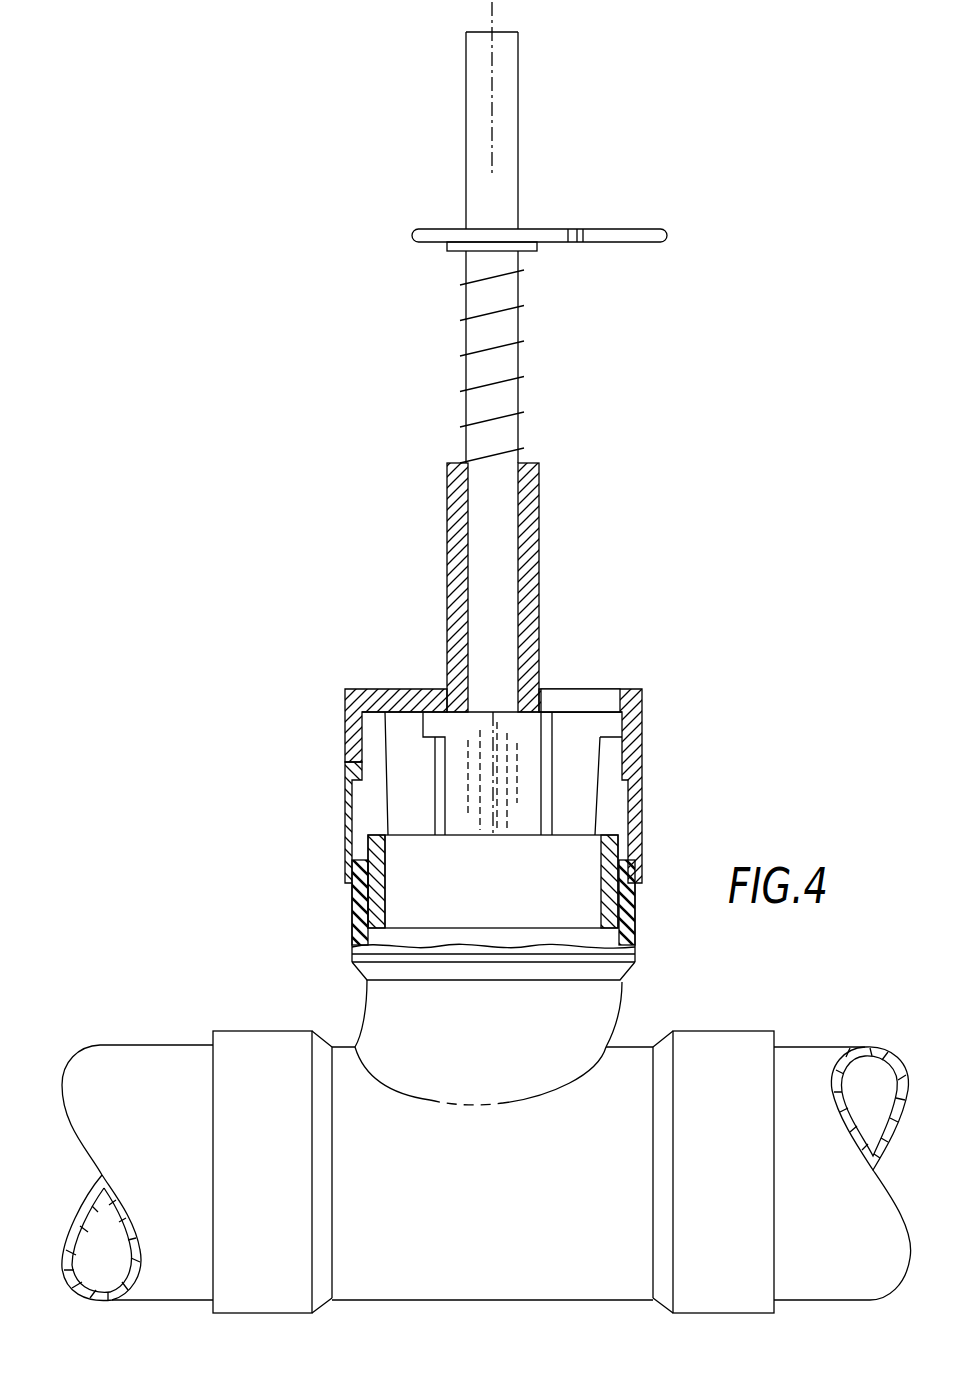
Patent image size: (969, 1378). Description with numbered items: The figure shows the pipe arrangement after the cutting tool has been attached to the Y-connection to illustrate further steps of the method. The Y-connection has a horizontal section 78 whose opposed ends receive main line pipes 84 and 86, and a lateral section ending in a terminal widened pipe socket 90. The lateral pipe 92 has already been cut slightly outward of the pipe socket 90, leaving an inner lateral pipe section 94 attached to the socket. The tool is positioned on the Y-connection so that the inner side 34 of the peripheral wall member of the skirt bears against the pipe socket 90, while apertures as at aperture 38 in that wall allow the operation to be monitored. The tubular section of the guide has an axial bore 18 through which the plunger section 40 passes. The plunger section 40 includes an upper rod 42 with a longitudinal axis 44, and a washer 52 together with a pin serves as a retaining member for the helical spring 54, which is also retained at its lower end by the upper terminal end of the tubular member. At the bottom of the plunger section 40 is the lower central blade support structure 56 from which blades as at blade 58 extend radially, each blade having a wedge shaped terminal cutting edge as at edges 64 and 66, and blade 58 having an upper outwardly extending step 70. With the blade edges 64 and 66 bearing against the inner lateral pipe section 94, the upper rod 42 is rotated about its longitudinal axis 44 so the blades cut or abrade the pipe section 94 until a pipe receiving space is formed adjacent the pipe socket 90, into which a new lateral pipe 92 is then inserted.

The axial bore 18 is at (478, 540).
The inner side 34 is at (357, 813).
The aperture 38 is at (345, 763).
The plunger section 40 is at (506, 357).
The upper rod 42 is at (518, 78).
The longitudinal axis 44 is at (492, 20).
The washer 52 is at (448, 252).
The helical spring 54 is at (460, 428).
The lower central blade support structure 56 is at (528, 826).
The blade 58 is at (548, 228).
The wedge shaped terminal cutting edge 64 is at (438, 803).
The wedge shaped terminal cutting edge 66 is at (600, 788).
The upper outwardly extending step 70 is at (432, 722).
The horizontal section 78 is at (345, 1053).
The main line pipe 84 is at (163, 1053).
The main line pipe 86 is at (800, 1053).
The terminal widened pipe socket 90 is at (350, 893).
The lateral pipe 92 is at (596, 858).
The inner lateral pipe section 94 is at (392, 852).